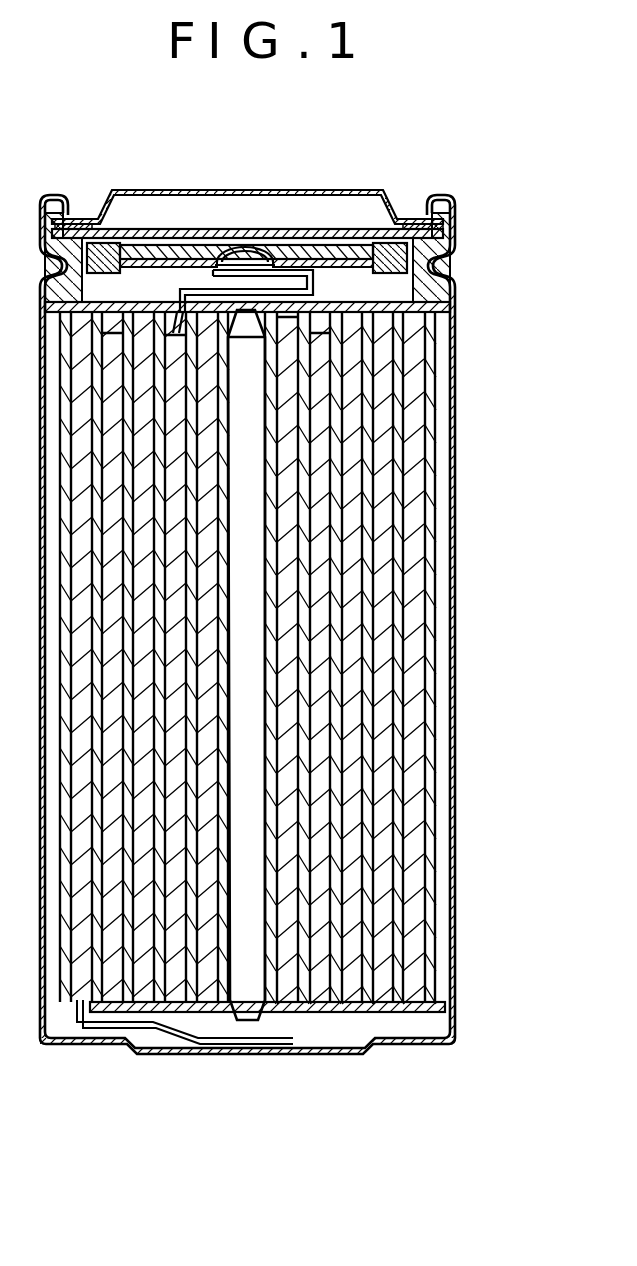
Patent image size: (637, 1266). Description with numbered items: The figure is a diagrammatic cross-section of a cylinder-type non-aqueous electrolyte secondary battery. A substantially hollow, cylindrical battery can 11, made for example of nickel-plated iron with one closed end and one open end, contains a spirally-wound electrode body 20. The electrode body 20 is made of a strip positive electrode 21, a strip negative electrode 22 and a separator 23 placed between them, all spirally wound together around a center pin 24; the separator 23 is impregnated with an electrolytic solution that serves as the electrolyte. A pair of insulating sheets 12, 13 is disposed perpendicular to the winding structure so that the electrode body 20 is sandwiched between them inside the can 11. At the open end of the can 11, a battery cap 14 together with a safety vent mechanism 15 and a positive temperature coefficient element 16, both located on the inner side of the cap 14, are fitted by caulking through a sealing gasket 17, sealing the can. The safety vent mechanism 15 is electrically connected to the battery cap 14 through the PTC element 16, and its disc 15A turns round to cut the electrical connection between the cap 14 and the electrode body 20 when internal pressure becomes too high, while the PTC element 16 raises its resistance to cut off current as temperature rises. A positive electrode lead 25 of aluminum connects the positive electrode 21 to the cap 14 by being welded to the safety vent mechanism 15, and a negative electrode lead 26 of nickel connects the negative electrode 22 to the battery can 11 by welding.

The battery can 11 is at (457, 350).
The insulating sheet 12 is at (445, 305).
The insulating sheet 13 is at (445, 1004).
The battery cap 14 is at (232, 189).
The safety vent mechanism 15 is at (334, 236).
The disc 15A is at (302, 247).
The positive temperature coefficient element 16 is at (440, 229).
The sealing gasket 17 is at (437, 268).
The spirally-wound electrode body 20 is at (294, 658).
The positive electrode 21 is at (383, 540).
The negative electrode 22 is at (413, 577).
The separator 23 is at (397, 618).
The center pin 24 is at (245, 675).
The positive electrode lead 25 is at (245, 258).
The negative electrode lead 26 is at (163, 1036).